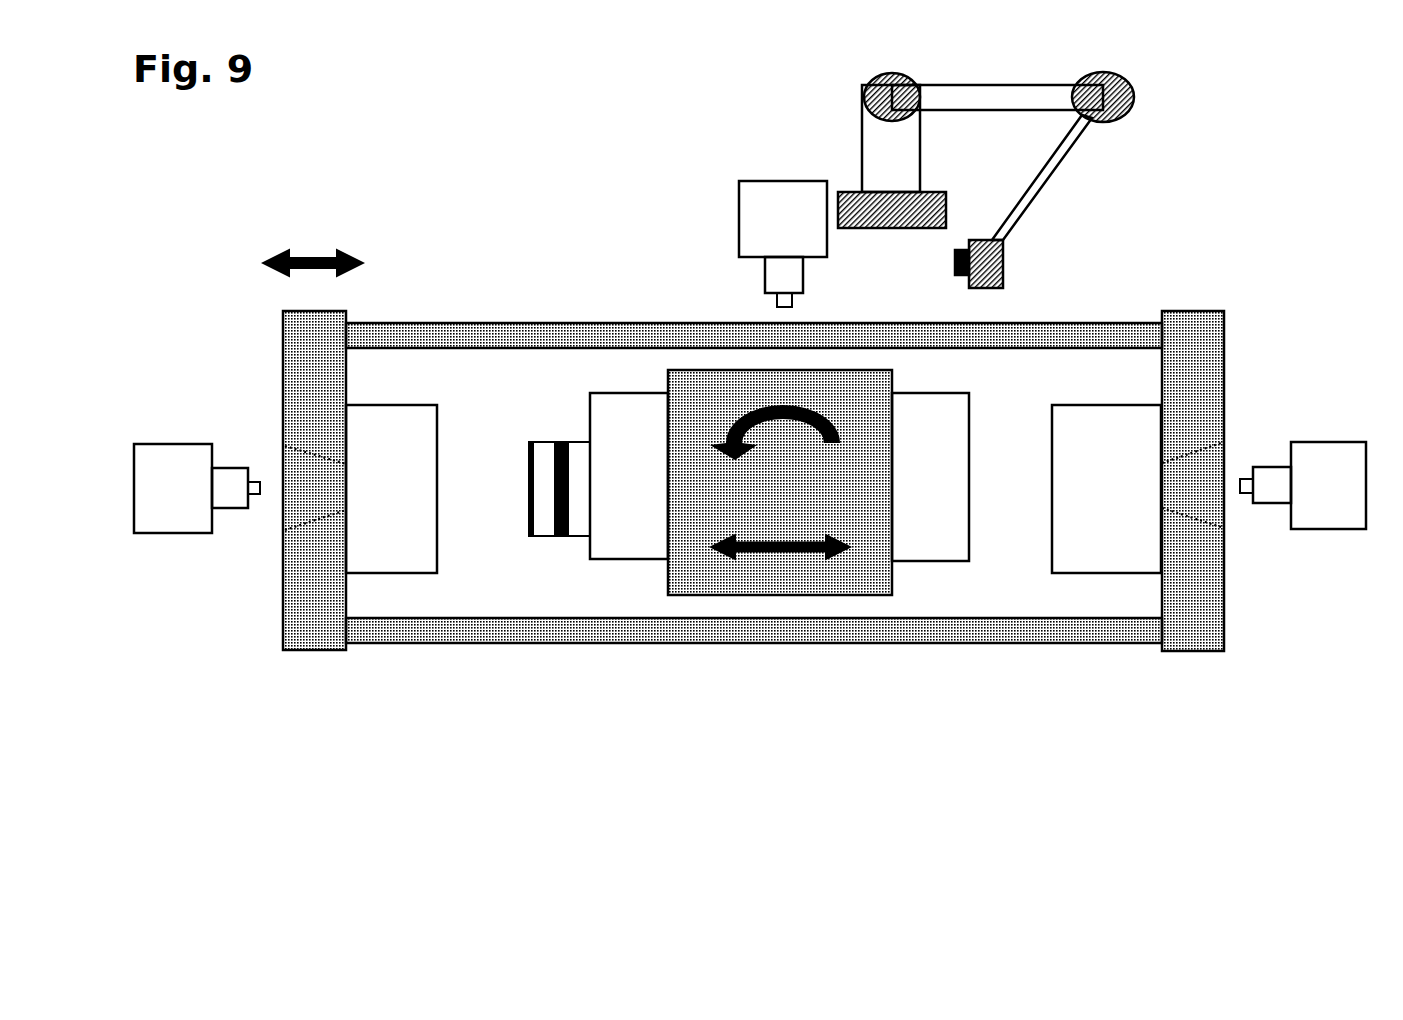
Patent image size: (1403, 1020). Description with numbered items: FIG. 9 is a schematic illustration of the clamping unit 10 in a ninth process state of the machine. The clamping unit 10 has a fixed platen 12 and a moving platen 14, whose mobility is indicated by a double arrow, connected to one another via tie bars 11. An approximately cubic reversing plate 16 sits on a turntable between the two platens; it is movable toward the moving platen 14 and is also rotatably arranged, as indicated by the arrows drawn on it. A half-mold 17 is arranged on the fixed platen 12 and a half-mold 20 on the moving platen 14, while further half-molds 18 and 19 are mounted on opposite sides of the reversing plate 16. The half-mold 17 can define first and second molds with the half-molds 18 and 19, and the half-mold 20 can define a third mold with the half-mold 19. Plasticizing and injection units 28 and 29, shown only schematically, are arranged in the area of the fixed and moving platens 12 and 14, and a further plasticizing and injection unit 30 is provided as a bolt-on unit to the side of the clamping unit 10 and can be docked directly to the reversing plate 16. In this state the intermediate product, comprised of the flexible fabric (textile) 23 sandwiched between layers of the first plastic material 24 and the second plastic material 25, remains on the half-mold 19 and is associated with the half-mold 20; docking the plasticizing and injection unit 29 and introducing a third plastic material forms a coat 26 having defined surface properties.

The clamping unit 10 is at (1306, 270).
The tie bars 11 is at (627, 333).
The fixed platen 12 is at (1205, 630).
The moving platen 14 is at (312, 393).
The reversing plate 16 is at (864, 595).
The half-mold 17 is at (1086, 429).
The half-mold 18 is at (922, 536).
The half-mold 19 is at (615, 428).
The half-mold 20 is at (413, 428).
The flexible fabric (textile) 23 is at (563, 537).
The first plastic material 24 is at (543, 488).
The second plastic material 25 is at (580, 488).
The coat 26 is at (530, 493).
The plasticizing and injection unit 28 is at (1339, 512).
The plasticizing and injection unit 29 is at (153, 488).
The plasticizing and injection unit 30 is at (757, 193).